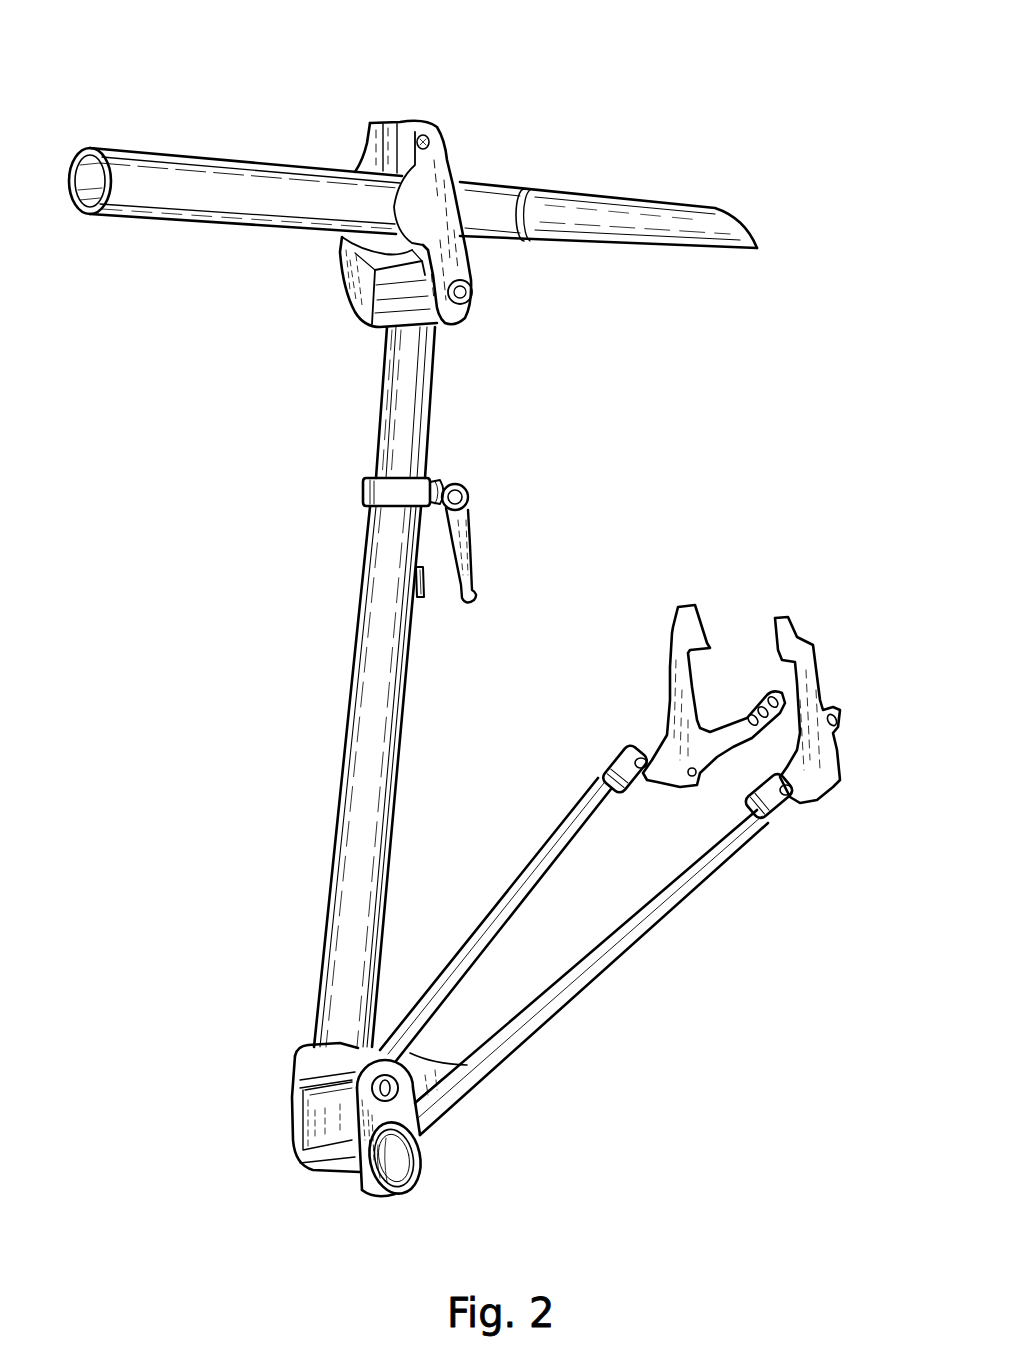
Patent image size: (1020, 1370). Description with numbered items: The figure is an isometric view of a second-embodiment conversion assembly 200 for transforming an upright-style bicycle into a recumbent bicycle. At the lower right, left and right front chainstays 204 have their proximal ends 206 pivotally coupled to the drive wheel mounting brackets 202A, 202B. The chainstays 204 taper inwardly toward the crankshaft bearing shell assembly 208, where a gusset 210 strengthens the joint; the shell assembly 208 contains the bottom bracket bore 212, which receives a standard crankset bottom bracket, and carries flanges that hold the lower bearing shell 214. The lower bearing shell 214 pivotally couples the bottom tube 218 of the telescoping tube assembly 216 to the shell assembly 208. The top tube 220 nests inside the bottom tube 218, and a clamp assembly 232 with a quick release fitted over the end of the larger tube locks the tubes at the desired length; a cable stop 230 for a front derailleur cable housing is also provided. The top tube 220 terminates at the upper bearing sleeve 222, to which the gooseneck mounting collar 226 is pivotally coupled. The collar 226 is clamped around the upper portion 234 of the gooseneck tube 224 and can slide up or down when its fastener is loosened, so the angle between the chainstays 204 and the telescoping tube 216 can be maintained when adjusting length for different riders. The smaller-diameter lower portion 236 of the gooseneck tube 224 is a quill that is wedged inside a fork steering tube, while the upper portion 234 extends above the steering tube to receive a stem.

The conversion assembly 200 is at (486, 600).
The drive wheel mounting bracket 202A is at (830, 786).
The drive wheel mounting bracket 202B is at (680, 667).
The front chainstays 204 is at (548, 846).
The proximal ends of front chainstays 206 is at (606, 760).
The crankshaft bearing shell assembly 208 is at (294, 1090).
The gusset 210 is at (462, 1092).
The bottom bracket bore 212 is at (420, 1160).
The lower bearing shell 214 is at (296, 1048).
The telescoping tube assembly 216 is at (302, 554).
The bottom tube 218 is at (365, 613).
The top tube 220 is at (383, 368).
The upper bearing sleeve 222 is at (372, 291).
The gooseneck tube 224 is at (252, 102).
The gooseneck mounting collar 226 is at (448, 163).
The cable stop 230 is at (422, 598).
The clamp assembly 232 is at (368, 482).
The upper portion of gooseneck tube 234 is at (148, 154).
The lower portion of gooseneck tube 236 is at (661, 205).